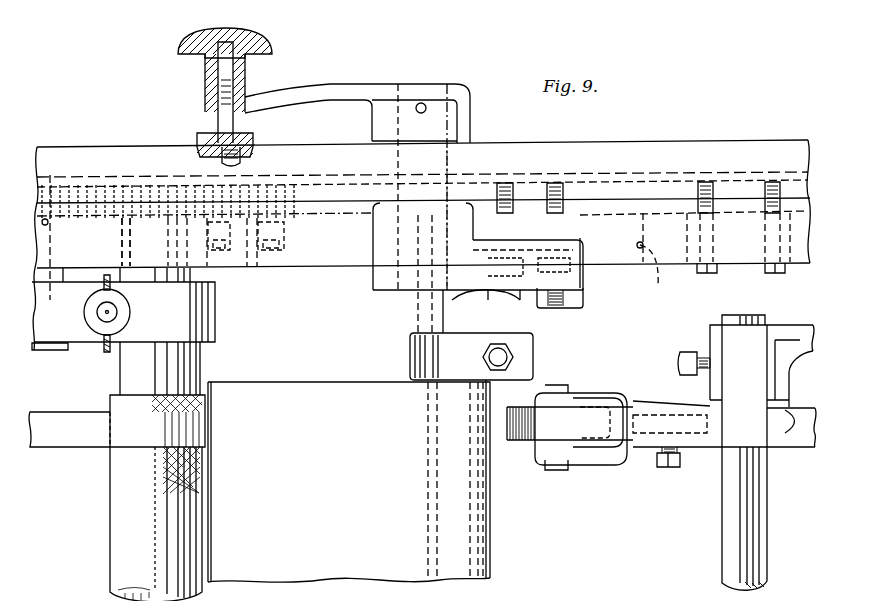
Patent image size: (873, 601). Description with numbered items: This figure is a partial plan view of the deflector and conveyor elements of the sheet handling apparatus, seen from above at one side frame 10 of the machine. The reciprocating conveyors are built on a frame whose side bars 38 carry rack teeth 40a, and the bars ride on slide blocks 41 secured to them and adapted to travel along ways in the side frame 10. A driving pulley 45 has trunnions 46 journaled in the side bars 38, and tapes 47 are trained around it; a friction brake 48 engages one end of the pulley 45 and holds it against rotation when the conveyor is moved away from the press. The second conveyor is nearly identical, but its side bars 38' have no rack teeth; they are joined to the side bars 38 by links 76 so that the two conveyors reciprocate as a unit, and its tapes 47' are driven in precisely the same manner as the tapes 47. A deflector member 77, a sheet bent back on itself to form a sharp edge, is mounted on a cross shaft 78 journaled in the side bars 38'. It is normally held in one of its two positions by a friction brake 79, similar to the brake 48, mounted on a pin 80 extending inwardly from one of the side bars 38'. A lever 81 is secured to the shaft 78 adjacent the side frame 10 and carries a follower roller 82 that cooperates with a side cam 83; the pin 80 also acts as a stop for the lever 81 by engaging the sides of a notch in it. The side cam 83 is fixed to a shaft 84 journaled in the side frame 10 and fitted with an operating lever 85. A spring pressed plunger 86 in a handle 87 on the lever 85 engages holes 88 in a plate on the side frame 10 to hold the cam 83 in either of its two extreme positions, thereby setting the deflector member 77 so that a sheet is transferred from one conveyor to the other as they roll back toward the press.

The side frame 10 is at (680, 133).
The side bar 38 is at (44, 195).
The side bar 38' is at (205, 231).
The rack teeth 40a is at (88, 178).
The slide block 41 is at (355, 249).
The driving pulley 45 is at (128, 495).
The trunnion 46 is at (130, 253).
The tape 47 is at (117, 417).
The tape 47' is at (724, 452).
The friction brake 48 is at (188, 308).
The link 76 is at (248, 270).
The deflector member 77 is at (295, 393).
The cross shaft 78 is at (487, 515).
The friction brake 79 is at (457, 352).
The pin 80 is at (517, 317).
The lever 81 is at (507, 300).
The follower roller 82 is at (590, 272).
The side cam 83 is at (580, 258).
The shaft 84 is at (450, 155).
The operating lever 85 is at (296, 97).
The spring pressed plunger 86 is at (213, 120).
The handle 87 is at (253, 36).
The hole 88 is at (253, 138).